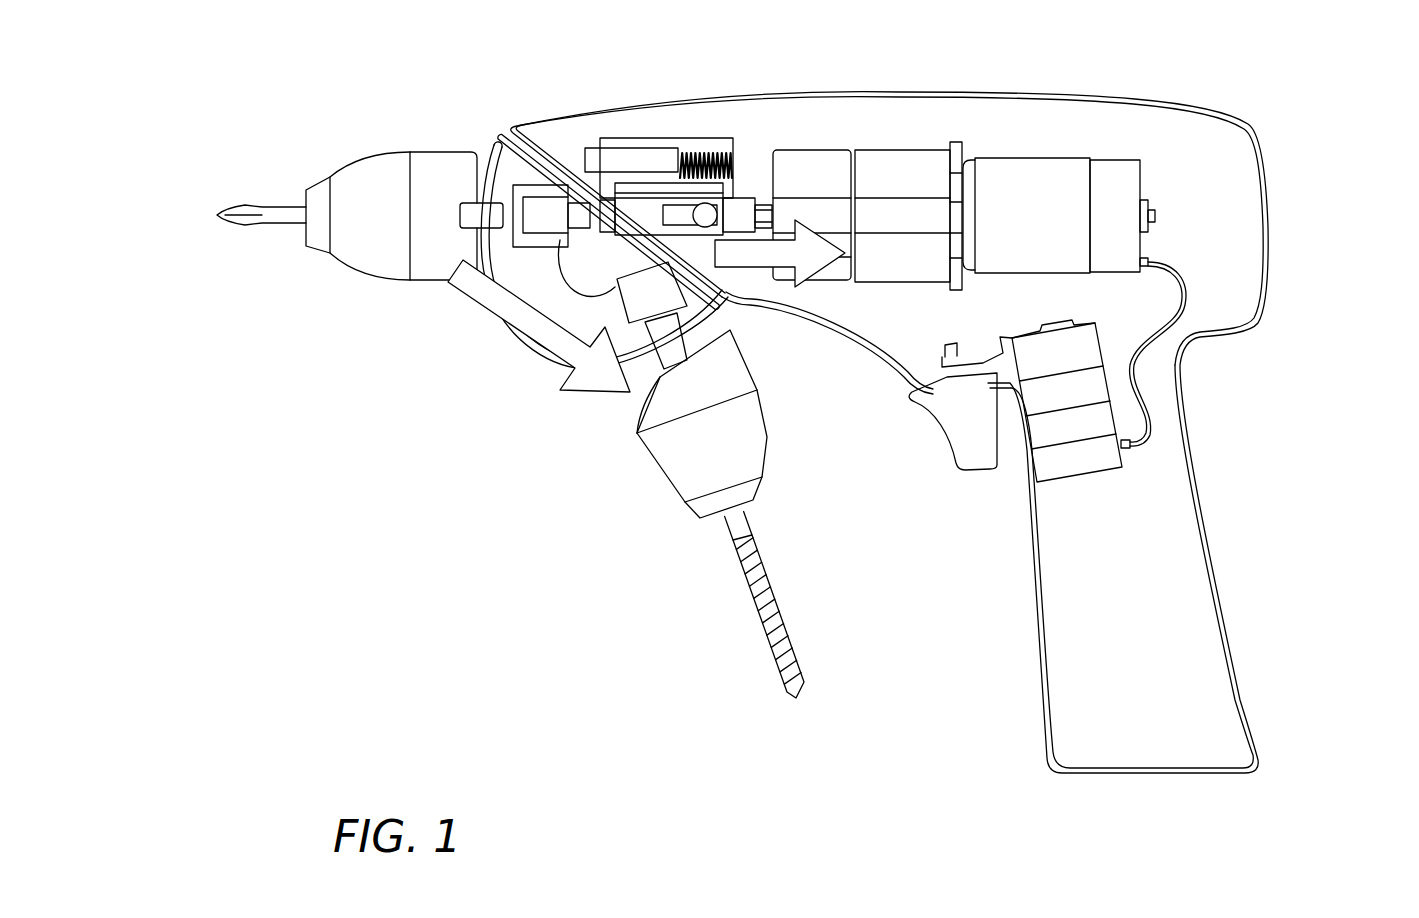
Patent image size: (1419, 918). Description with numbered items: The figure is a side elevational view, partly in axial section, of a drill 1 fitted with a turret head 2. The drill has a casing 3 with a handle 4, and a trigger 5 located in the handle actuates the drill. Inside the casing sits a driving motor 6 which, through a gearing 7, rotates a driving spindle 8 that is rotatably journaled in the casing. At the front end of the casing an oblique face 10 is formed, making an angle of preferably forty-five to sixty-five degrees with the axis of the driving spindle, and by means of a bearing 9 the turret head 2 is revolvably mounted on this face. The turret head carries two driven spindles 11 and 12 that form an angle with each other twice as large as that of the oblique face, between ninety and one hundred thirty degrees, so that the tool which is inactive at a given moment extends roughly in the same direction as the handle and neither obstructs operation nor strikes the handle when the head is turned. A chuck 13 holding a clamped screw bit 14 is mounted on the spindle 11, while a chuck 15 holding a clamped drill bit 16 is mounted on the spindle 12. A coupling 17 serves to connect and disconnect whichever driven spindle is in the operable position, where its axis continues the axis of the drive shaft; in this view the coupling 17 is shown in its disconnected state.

The drill 1 is at (1282, 221).
The turret head 2 is at (493, 328).
The casing 3 is at (1170, 100).
The handle 4 is at (1241, 685).
The trigger 5 is at (952, 453).
The driving motor 6 is at (1017, 170).
The gearing 7 is at (880, 163).
The driving spindle 8 is at (806, 165).
The bearing 9 is at (588, 195).
The oblique face 10 is at (518, 130).
The driven spindle 11 is at (474, 168).
The driven spindle 12 is at (667, 373).
The chuck 13 is at (365, 282).
The screw bit 14 is at (268, 230).
The chuck 15 is at (680, 513).
The drill bit 16 is at (775, 700).
The coupling 17 is at (752, 200).